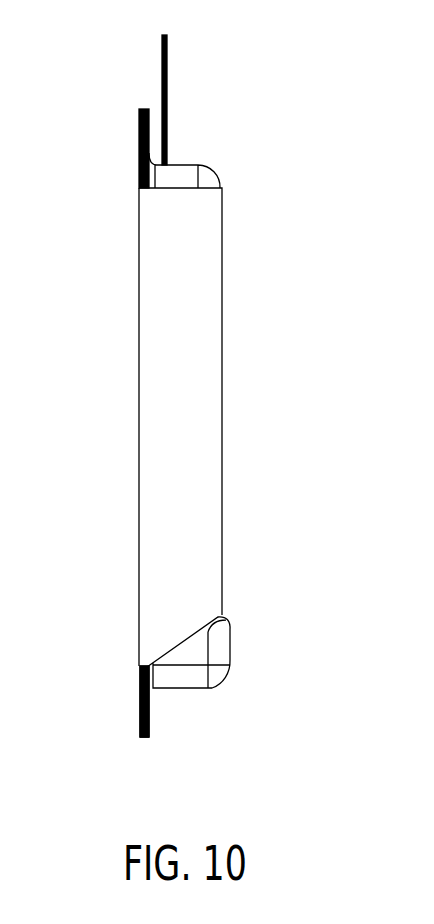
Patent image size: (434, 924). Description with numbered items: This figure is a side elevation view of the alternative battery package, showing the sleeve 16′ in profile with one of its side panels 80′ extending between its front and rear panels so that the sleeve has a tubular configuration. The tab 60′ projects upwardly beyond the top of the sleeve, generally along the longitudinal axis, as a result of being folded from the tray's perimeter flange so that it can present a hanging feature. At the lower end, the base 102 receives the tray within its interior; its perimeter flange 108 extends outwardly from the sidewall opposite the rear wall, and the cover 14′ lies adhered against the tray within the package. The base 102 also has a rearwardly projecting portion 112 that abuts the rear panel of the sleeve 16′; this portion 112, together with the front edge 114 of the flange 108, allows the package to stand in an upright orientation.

The side panel 80′ is at (217, 352).
The sleeve 16′ is at (139, 640).
The tab 60′ is at (168, 53).
The base 102 is at (208, 182).
The rearwardly projecting portion 112 is at (232, 645).
The cover 14′ is at (143, 708).
The perimeter flange 108 is at (150, 712).
The front edge 114 is at (146, 738).